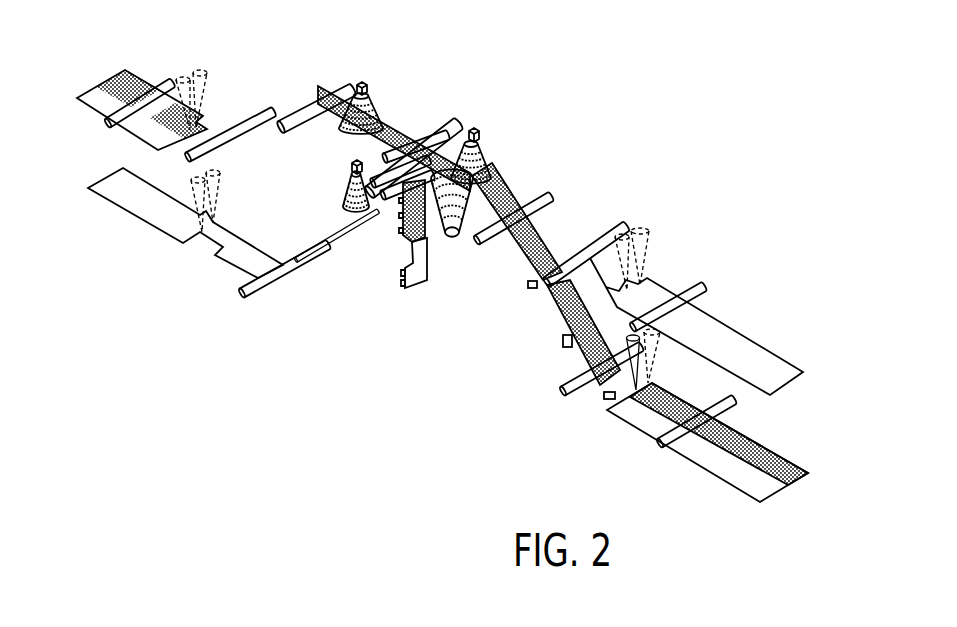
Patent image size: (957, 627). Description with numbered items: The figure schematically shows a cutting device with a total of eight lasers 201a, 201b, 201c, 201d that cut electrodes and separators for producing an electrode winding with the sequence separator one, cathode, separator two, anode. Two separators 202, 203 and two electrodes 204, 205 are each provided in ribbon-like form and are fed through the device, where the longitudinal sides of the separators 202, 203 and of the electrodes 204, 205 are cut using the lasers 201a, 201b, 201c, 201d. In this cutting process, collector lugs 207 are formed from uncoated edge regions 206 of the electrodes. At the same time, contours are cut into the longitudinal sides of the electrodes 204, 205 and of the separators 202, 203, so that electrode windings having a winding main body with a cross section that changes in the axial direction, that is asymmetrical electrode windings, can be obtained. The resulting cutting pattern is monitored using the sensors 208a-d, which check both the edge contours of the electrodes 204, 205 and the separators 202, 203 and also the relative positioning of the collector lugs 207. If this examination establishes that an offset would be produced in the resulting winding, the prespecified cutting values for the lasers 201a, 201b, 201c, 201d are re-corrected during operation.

The laser 201a is at (185, 197).
The laser 201b is at (216, 56).
The laser 201c is at (628, 408).
The laser 201d is at (648, 215).
The separator 202 is at (124, 198).
The separator 203 is at (740, 343).
The electrode 204 is at (101, 70).
The electrode 205 is at (792, 452).
The uncoated edge region 206 is at (718, 487).
The collector lug 207 is at (531, 288).
The sensors 208a-d is at (368, 73).